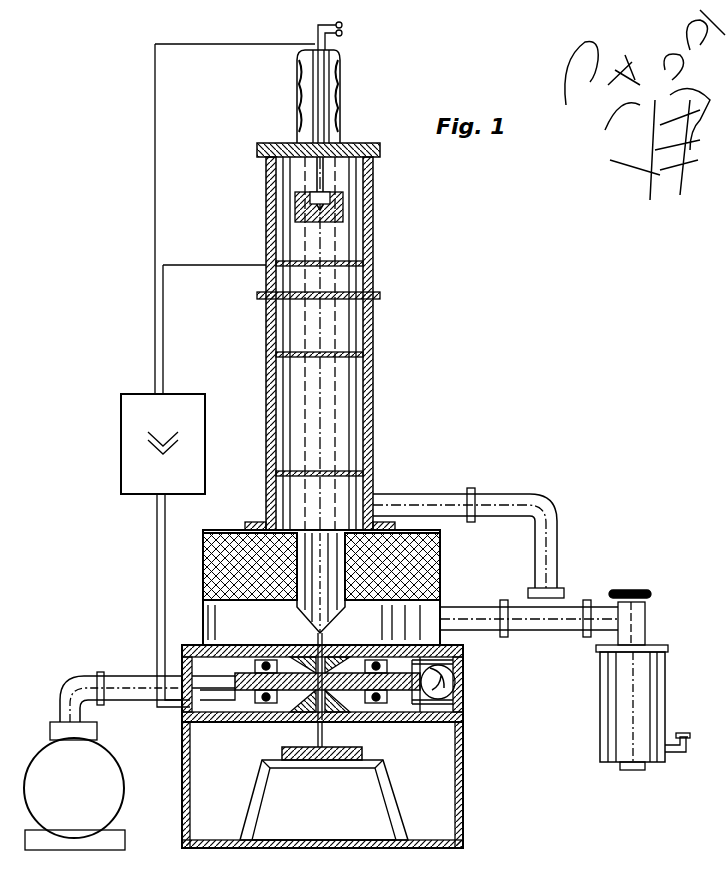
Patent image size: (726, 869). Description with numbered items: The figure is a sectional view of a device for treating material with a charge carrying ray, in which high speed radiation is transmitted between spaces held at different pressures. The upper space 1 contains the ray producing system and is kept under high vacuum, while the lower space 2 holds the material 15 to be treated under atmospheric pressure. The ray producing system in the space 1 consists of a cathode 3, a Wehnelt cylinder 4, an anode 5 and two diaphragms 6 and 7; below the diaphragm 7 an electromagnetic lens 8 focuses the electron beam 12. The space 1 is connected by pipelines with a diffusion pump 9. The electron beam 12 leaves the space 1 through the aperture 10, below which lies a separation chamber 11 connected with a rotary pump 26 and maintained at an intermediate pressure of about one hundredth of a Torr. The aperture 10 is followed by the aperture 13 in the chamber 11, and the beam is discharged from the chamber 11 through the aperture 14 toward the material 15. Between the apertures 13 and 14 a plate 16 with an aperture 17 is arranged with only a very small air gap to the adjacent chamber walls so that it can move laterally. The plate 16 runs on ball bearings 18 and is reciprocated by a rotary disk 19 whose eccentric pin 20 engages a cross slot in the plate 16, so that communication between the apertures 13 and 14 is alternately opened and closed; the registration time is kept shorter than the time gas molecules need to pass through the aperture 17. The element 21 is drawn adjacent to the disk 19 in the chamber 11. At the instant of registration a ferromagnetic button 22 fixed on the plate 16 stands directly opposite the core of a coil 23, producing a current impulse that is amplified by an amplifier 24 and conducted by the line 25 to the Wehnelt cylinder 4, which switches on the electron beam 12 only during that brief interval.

The space 1 is at (292, 410).
The space 2 is at (440, 788).
The cathode 3 is at (330, 190).
The Wehnelt cylinder 4 is at (345, 204).
The anode 5 is at (365, 264).
The diaphragm 6 is at (366, 355).
The diaphragm 7 is at (360, 478).
The electromagnetic lens 8 is at (416, 570).
The diffusion pump 9 is at (610, 720).
The aperture 10 is at (316, 636).
The separation chamber 11 is at (322, 698).
The electron beam 12 is at (320, 420).
The aperture 13 is at (348, 645).
The aperture 14 is at (318, 722).
The material 15 is at (282, 753).
The plate 16 is at (252, 675).
The aperture 17 is at (355, 724).
The ball bearings 18 is at (391, 706).
The rotary disk 19 is at (452, 680).
The eccentric pin 20 is at (454, 661).
The lower guide 21 is at (454, 700).
The button 22 is at (255, 691).
The coil 23 is at (233, 724).
The amplifier 24 is at (124, 428).
The line 25 is at (200, 46).
The rotary pump 26 is at (110, 778).